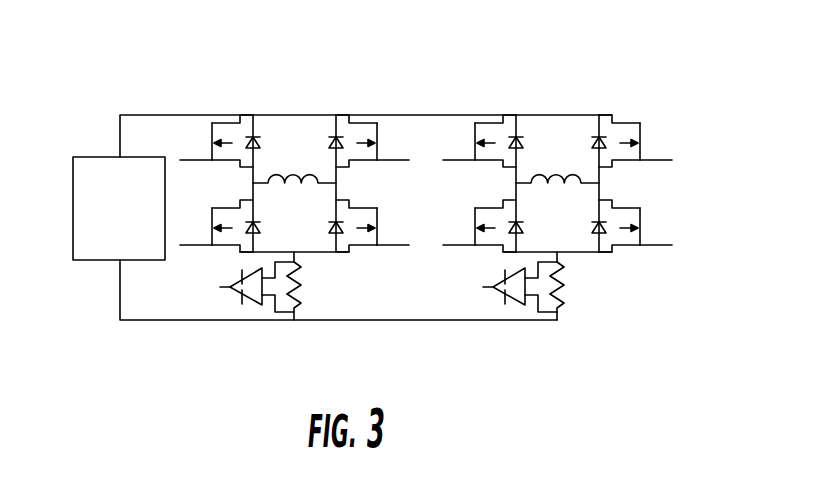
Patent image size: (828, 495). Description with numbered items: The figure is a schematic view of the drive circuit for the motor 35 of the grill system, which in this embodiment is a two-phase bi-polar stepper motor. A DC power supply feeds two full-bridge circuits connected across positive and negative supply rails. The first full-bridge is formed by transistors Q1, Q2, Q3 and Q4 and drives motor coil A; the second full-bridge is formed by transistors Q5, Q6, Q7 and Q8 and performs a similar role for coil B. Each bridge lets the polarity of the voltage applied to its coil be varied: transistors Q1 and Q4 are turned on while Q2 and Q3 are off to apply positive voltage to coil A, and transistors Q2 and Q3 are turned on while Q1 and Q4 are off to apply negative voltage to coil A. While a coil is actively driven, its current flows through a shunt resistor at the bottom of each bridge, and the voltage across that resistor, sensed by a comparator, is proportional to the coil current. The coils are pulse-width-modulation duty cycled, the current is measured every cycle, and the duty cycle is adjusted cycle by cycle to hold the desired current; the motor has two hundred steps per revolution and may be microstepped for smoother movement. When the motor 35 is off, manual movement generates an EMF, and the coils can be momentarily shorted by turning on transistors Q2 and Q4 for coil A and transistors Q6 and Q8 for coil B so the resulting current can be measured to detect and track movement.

The motor 35 is at (372, 172).
The transistor Q1 is at (220, 141).
The transistor Q2 is at (220, 226).
The transistor Q3 is at (369, 141).
The transistor Q4 is at (369, 226).
The transistor Q5 is at (483, 141).
The transistor Q6 is at (483, 226).
The transistor Q7 is at (632, 141).
The transistor Q8 is at (632, 226).